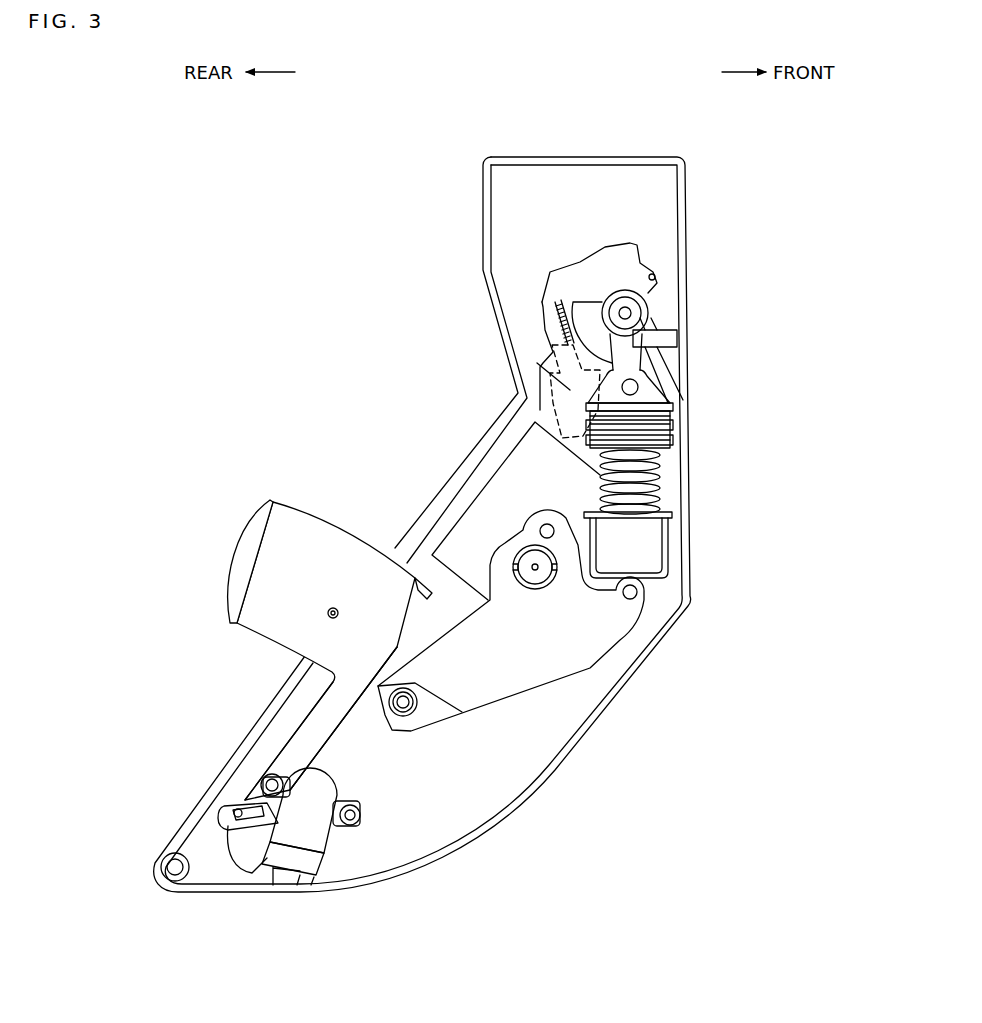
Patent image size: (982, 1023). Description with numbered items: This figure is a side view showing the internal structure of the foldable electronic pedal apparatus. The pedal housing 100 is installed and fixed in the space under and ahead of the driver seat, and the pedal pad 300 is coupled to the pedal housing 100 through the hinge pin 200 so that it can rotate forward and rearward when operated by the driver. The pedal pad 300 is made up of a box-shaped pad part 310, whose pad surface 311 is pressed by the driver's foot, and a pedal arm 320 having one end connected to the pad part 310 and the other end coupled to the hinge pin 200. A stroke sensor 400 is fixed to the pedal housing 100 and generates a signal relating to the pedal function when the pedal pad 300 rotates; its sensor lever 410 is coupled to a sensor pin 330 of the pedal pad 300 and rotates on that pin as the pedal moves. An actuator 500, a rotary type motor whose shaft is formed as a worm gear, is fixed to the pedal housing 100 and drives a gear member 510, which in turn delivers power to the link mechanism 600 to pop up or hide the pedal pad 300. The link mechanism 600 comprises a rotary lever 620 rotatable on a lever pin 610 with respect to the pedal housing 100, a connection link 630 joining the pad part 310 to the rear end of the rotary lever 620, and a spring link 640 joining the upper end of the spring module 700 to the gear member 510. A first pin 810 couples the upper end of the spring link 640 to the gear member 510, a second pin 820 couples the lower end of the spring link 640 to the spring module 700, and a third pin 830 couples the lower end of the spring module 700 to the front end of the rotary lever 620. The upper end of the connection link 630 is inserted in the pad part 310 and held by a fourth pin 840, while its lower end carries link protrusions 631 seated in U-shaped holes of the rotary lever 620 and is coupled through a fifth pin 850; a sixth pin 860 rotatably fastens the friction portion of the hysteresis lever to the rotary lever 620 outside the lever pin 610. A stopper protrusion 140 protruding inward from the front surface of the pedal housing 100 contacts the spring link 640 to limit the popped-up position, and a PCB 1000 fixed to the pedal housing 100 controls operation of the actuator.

The pedal housing 100 is at (483, 218).
The stopper protrusion 140 is at (670, 333).
The hinge pin 200 is at (173, 868).
The pedal pad 300 is at (261, 593).
The pad part 310 is at (297, 543).
The pad surface 311 is at (230, 548).
The pedal arm 320 is at (317, 725).
The sensor pin 330 is at (231, 808).
The stroke sensor 400 is at (307, 820).
The sensor lever 410 is at (255, 832).
The actuator 500 is at (545, 350).
The gear member 510 is at (588, 313).
The link mechanism 600 is at (451, 729).
The lever pin 610 is at (634, 598).
The rotary lever 620 is at (552, 648).
The connection link 630 is at (388, 677).
The link protrusions 631 is at (413, 707).
The spring link 640 is at (667, 341).
The spring module 700 is at (658, 478).
The first pin 810 is at (628, 311).
The second pin 820 is at (640, 390).
The third pin 830 is at (545, 576).
The fourth pin 840 is at (333, 607).
The fifth pin 850 is at (403, 716).
The sixth pin 860 is at (552, 532).
The PCB 1000 is at (510, 490).